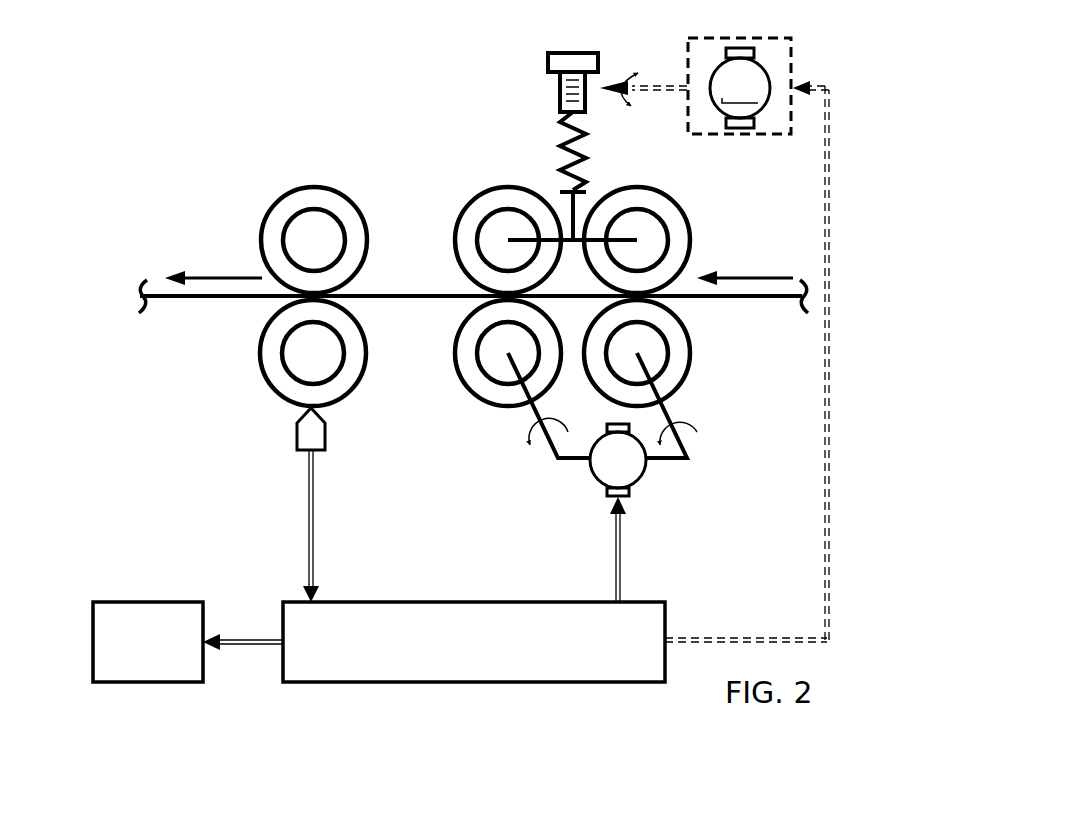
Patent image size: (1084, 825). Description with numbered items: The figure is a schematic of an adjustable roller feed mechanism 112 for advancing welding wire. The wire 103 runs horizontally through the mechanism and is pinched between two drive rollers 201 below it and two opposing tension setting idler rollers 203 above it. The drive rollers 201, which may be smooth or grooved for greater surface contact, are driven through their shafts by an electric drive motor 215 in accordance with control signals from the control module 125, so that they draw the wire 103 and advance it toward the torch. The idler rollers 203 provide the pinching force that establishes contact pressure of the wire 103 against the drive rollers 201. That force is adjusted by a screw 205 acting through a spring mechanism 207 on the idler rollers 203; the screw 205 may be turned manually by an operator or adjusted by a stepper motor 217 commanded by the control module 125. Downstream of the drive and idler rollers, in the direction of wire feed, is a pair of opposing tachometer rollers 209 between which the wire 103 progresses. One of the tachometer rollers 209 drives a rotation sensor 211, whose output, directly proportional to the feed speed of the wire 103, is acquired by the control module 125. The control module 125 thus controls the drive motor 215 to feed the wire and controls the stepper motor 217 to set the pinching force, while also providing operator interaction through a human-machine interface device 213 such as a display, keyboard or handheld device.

The adjustable roller feed mechanism 112 is at (364, 102).
The wire 103 is at (236, 300).
The tachometer rollers 209 is at (290, 188).
The idler rollers 203 is at (492, 190).
The drive rollers 201 is at (487, 402).
The screw 205 is at (575, 52).
The spring mechanism 207 is at (560, 145).
The stepper motor 217 is at (770, 38).
The drive motor 215 is at (598, 485).
The rotation sensor 211 is at (328, 437).
The control module 125 is at (555, 589).
The human-machine interface device 213 is at (188, 642).